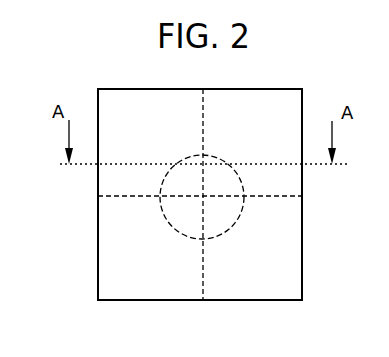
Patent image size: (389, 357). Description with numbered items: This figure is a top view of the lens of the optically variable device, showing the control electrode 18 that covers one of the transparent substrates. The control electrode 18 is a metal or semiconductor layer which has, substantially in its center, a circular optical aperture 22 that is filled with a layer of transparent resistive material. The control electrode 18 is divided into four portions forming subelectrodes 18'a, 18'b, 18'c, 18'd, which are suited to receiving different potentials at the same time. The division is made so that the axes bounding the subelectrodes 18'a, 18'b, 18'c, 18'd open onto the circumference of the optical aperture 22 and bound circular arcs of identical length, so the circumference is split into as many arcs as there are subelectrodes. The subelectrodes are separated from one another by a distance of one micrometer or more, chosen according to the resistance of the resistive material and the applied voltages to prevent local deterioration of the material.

The control electrode 18 is at (200, 160).
The subelectrode 18'a is at (113, 127).
The subelectrode 18'b is at (279, 115).
The subelectrode 18'c is at (289, 248).
The subelectrode 18'd is at (128, 268).
The optical aperture 22 is at (226, 211).